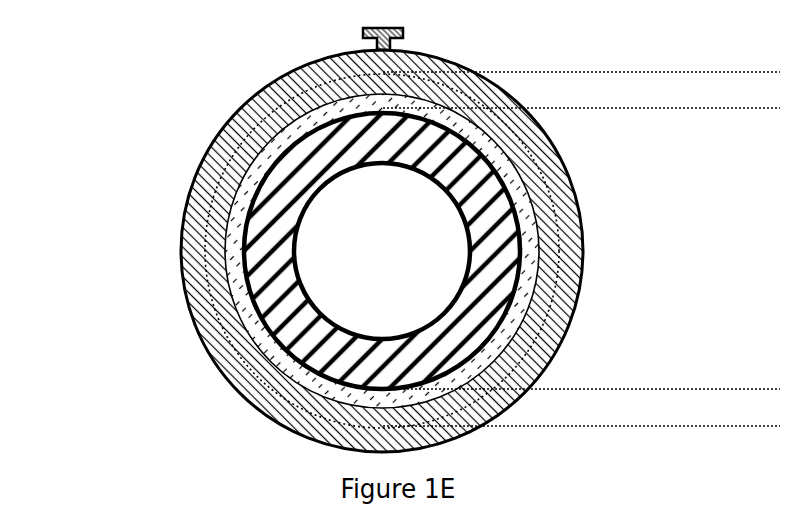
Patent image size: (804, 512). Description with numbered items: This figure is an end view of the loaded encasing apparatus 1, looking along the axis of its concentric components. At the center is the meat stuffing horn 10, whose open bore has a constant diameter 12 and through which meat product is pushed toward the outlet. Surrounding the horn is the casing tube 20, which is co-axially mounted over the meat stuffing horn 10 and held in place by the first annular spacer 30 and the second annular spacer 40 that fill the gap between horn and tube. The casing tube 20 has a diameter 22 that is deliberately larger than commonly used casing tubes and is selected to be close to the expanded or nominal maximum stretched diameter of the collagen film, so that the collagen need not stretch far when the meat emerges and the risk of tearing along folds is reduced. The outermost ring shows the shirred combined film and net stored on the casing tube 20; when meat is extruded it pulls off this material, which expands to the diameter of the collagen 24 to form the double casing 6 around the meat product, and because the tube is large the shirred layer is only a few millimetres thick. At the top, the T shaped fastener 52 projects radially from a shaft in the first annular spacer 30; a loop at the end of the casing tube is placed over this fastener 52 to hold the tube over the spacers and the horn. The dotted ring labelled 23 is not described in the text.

The encasing apparatus 1 is at (112, 90).
The first annular spacer 30 is at (238, 103).
The meat stuffing horn 10 is at (340, 167).
The casing tube 20 is at (250, 190).
The second annular spacer 40 is at (267, 237).
The diameter of the meat stuffing horn 12 is at (382, 165).
The diameter of the casing tube 22 is at (628, 108).
The expanded diameter of the collagen 24 is at (703, 72).
The T shaped fastener 52 is at (415, 37).
The reinforcement braid 23 is at (237, 338).
The double casing 6 is at (262, 385).